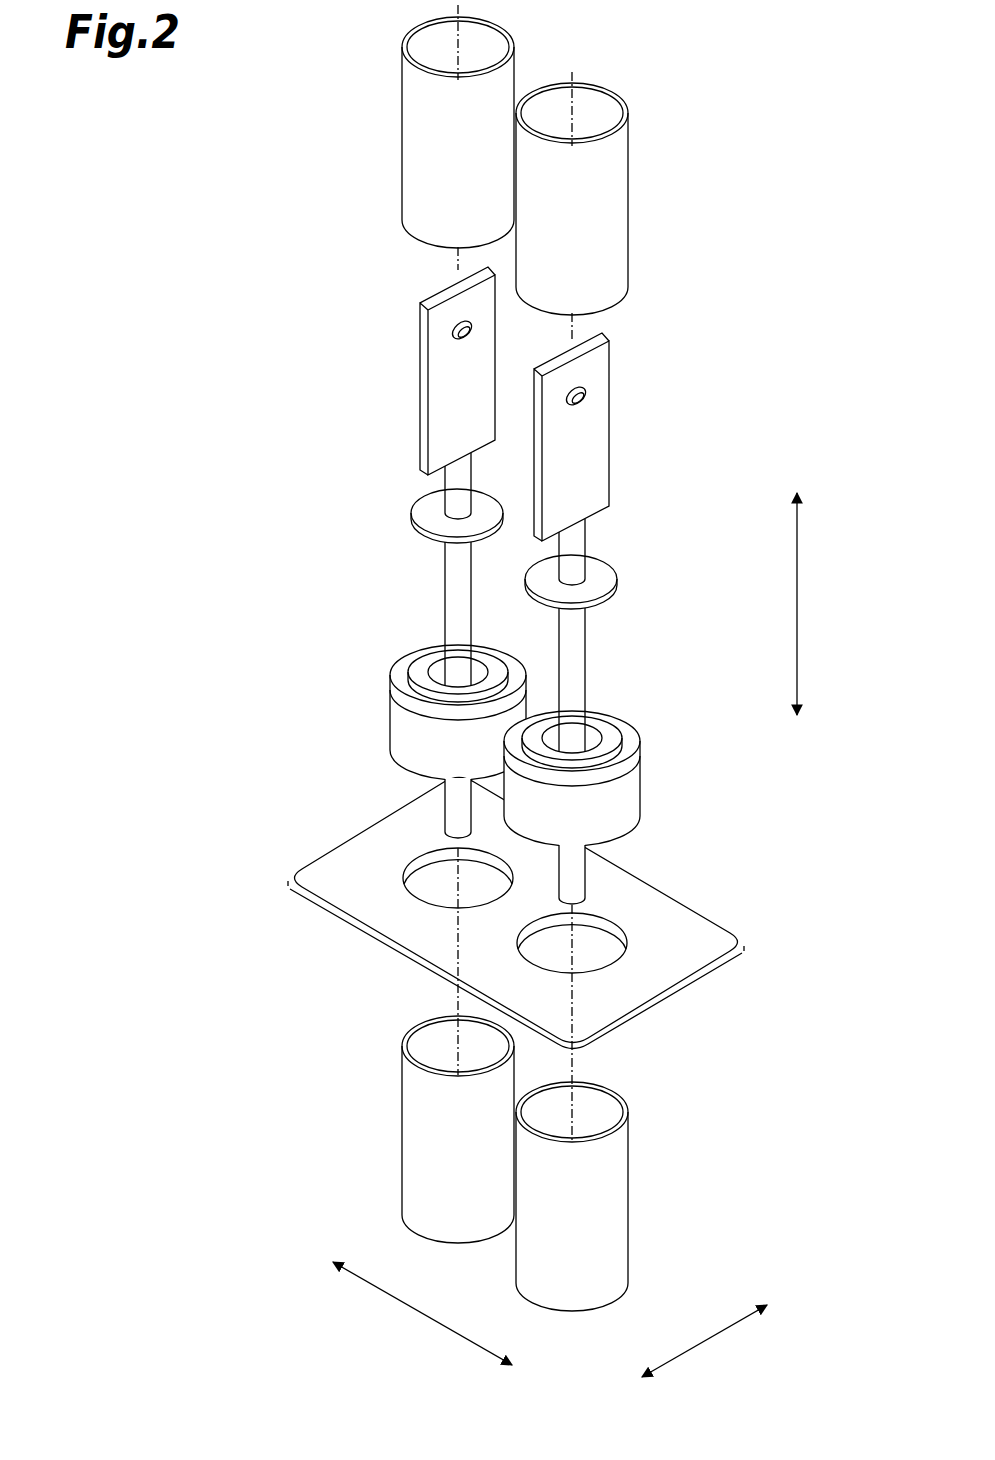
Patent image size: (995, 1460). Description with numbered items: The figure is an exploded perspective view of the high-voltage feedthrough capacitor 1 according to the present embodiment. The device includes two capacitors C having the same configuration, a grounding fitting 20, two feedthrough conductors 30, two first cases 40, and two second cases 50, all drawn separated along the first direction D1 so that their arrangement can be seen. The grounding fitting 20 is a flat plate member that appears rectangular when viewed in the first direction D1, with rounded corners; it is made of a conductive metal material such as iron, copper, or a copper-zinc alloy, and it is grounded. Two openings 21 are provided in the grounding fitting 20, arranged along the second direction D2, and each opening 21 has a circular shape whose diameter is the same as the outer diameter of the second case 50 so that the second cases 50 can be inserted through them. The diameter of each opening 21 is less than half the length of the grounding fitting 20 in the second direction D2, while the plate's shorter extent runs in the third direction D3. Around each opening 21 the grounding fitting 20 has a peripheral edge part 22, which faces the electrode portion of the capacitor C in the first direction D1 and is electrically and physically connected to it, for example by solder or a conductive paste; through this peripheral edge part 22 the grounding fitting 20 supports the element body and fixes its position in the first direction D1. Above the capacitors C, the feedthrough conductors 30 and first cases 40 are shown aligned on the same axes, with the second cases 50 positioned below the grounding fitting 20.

The high-voltage feedthrough capacitor 1 is at (733, 113).
The grounding fitting 20 is at (680, 923).
The opening 21 is at (417, 858).
The peripheral edge part 22 is at (395, 870).
The feedthrough conductor 30 is at (420, 378).
The first case 40 is at (418, 150).
The second case 50 is at (418, 1145).
The capacitor C is at (398, 720).
The first direction D1 is at (819, 604).
The second direction D2 is at (422, 1313).
The third direction D3 is at (704, 1342).